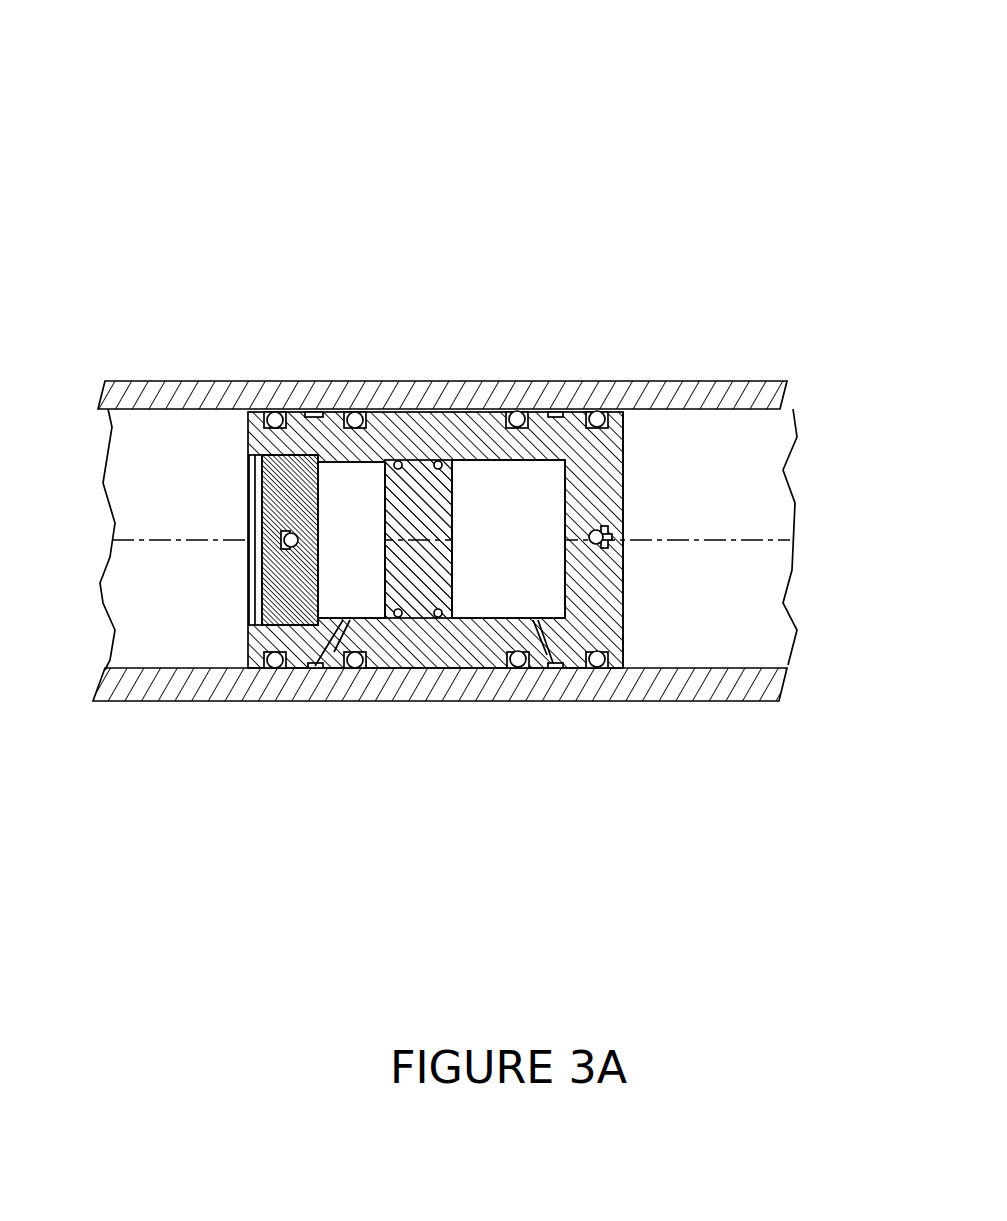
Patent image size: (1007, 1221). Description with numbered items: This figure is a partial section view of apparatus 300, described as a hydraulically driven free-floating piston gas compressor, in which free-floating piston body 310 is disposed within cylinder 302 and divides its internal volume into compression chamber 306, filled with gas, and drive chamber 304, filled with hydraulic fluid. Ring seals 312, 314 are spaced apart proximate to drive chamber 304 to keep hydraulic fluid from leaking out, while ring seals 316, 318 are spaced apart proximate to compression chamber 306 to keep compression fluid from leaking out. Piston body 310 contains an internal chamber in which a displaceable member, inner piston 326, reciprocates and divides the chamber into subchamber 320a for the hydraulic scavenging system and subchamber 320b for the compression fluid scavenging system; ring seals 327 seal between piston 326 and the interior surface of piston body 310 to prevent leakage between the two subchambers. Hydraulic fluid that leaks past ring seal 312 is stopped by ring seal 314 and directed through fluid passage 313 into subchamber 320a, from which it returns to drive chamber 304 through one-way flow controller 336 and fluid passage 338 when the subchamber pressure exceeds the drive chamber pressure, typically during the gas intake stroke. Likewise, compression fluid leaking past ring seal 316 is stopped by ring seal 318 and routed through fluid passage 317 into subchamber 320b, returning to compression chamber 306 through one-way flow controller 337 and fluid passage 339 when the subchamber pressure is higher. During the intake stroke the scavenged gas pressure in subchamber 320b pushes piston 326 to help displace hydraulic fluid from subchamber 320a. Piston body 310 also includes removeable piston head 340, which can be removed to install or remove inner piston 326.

The apparatus 300 is at (243, 128).
The cylinder 302 is at (180, 395).
The drive chamber 304 is at (751, 606).
The compression chamber 306 is at (217, 610).
The piston body 310 is at (470, 432).
The ring seal 312 is at (624, 412).
The fluid passage 313 is at (540, 632).
The ring seal 314 is at (540, 412).
The ring seal 316 is at (273, 412).
The fluid passage 317 is at (332, 668).
The ring seal 318 is at (359, 412).
The subchamber 320a is at (498, 578).
The subchamber 320b is at (368, 588).
The piston 326 is at (428, 590).
The ring seals 327 is at (612, 660).
The one-way flow controller 336 is at (606, 525).
The one-way flow controller 337 is at (288, 522).
The fluid passage 338 is at (603, 537).
The fluid passage 339 is at (283, 538).
The removeable piston head 340 is at (250, 628).